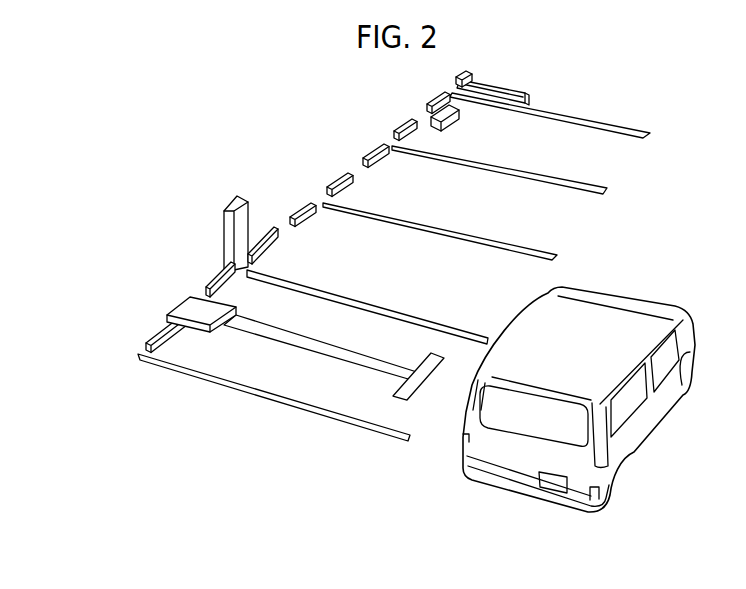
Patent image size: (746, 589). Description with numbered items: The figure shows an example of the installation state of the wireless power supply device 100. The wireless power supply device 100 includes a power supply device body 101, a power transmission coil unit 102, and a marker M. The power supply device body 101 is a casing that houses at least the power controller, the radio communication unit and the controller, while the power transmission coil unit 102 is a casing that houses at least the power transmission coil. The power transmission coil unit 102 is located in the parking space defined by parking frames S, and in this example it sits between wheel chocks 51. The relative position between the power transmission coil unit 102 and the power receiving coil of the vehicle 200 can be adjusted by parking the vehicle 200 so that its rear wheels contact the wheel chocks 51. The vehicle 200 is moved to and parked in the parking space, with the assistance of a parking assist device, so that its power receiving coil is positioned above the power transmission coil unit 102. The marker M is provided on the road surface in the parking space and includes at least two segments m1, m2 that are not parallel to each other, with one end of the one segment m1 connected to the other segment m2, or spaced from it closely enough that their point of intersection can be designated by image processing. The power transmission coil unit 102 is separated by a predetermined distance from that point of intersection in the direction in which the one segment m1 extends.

The wireless power supply device 100 is at (78, 206).
The power supply device body 101 is at (226, 232).
The power transmission coil unit 102 is at (180, 297).
The wheel chocks 51 is at (213, 281).
The parking frames S is at (292, 282).
The one segment m1 is at (339, 346).
The other segment m2 is at (420, 356).
The marker M is at (334, 366).
The vehicle 200 is at (556, 499).